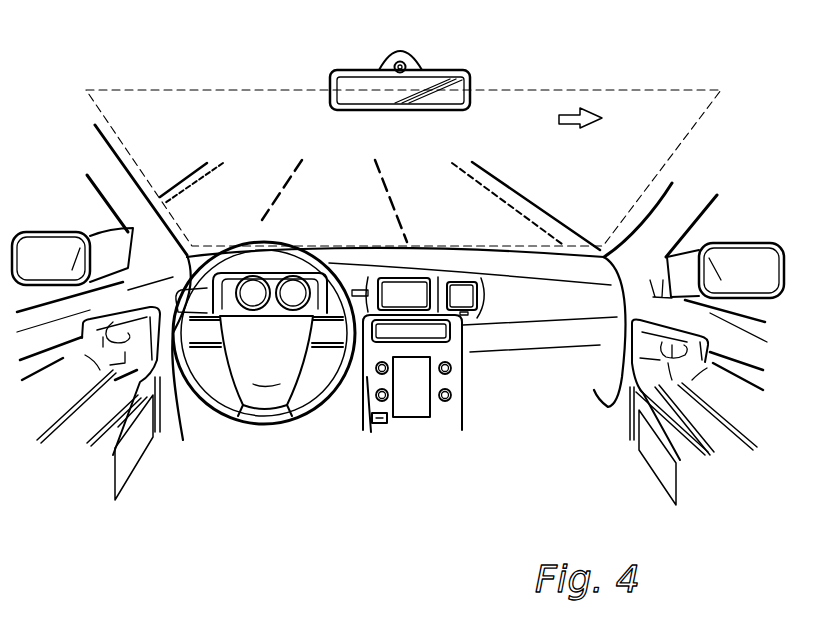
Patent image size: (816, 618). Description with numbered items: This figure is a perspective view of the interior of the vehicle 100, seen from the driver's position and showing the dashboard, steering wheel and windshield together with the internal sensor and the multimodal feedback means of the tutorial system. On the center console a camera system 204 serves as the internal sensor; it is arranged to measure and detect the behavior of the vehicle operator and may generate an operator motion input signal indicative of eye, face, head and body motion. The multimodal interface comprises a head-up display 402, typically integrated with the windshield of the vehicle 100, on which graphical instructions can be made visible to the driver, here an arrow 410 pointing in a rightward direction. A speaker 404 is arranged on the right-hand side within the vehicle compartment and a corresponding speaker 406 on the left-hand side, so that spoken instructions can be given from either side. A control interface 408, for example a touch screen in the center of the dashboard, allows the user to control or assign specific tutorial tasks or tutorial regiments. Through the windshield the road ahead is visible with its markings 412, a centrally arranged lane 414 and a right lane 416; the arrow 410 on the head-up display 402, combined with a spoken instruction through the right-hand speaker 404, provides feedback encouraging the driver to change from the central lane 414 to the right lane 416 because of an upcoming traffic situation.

The vehicle 100 is at (122, 143).
The camera system 204 is at (379, 427).
The head-up display 402 is at (622, 92).
The speaker 404 is at (644, 452).
The speaker 406 is at (140, 453).
The control interface 408 is at (432, 407).
The arrow 410 is at (572, 117).
The left road edge line 412 is at (247, 180).
The centrally arranged lane 414 is at (325, 175).
The right lane 416 is at (412, 175).